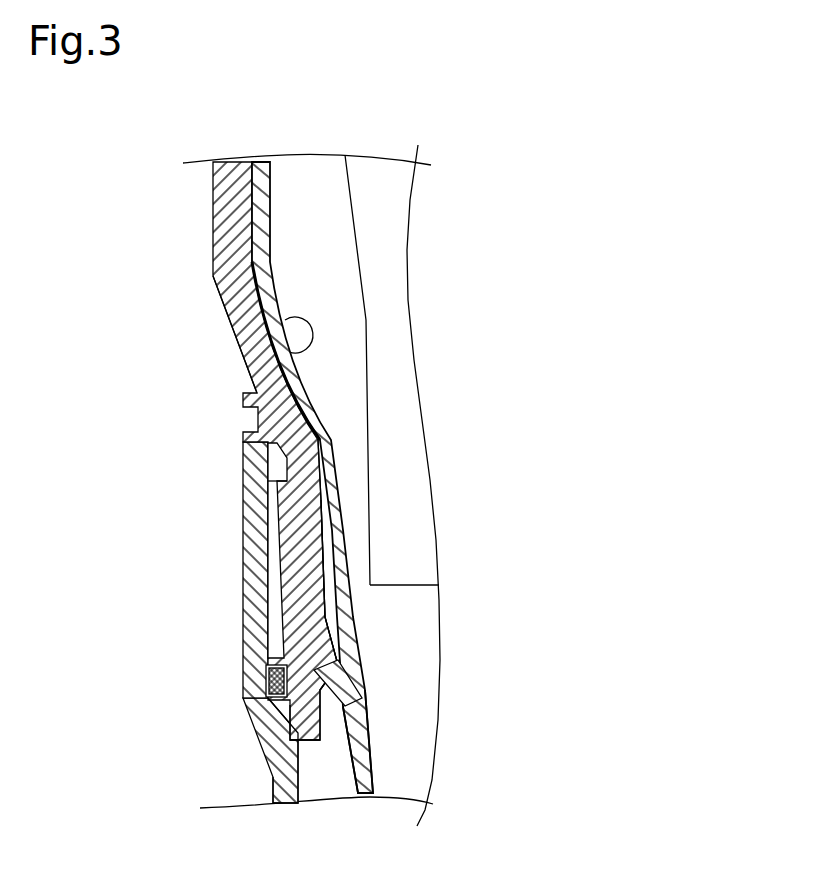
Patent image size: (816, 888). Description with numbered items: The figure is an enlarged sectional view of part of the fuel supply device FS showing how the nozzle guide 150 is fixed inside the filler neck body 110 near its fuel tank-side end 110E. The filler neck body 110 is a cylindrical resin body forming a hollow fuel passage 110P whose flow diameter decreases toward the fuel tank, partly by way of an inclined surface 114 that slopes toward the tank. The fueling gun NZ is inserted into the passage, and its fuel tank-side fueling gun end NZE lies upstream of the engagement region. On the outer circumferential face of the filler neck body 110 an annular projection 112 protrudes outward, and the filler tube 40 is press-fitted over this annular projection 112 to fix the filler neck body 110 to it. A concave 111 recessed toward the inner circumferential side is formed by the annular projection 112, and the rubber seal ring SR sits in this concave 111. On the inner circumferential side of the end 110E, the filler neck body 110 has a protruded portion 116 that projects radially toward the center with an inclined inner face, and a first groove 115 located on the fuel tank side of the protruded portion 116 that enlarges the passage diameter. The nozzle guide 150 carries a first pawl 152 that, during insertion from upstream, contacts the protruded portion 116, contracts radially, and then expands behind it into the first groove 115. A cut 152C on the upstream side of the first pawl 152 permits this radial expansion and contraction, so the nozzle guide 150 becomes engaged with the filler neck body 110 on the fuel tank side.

The fuel supply device FS is at (563, 185).
The fueling gun NZ is at (402, 307).
The fuel tank-side fueling gun end NZE is at (412, 588).
The filler neck body 110 is at (223, 258).
The fuel passage 110P is at (333, 230).
The inclined surface 114 is at (283, 366).
The annular projection 112 is at (278, 540).
The filler tube 40 is at (267, 583).
The concave 111 is at (288, 718).
The first groove 115 is at (303, 742).
The fuel tank-side end 110E is at (280, 775).
The seal ring SR is at (268, 678).
The protruded portion 116 is at (330, 650).
The nozzle guide 150 is at (335, 525).
The first pawl 152 is at (335, 695).
The cut 152C is at (357, 633).